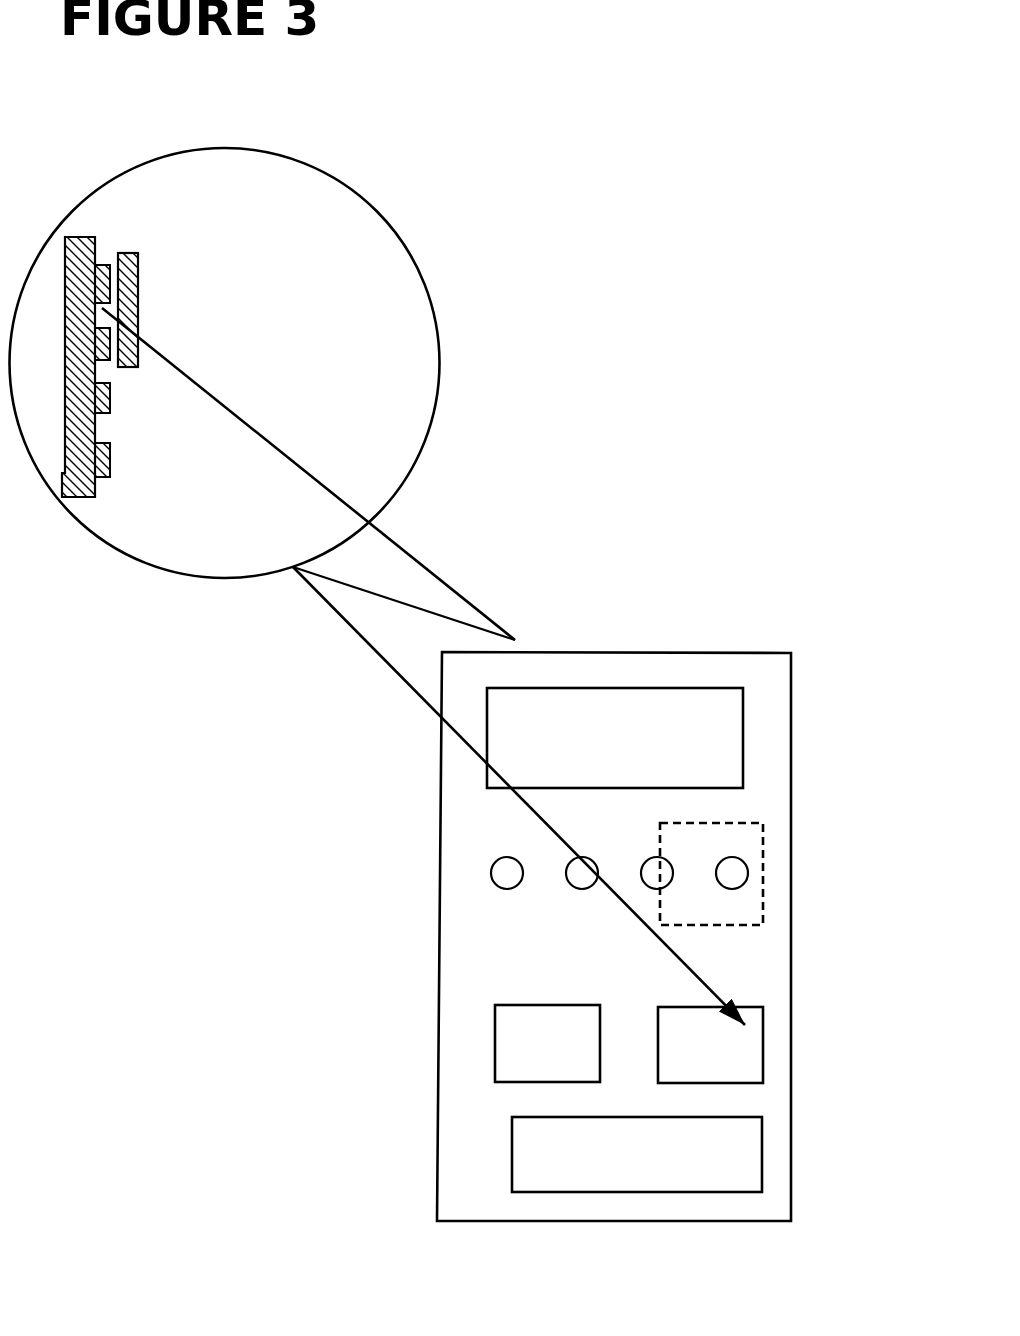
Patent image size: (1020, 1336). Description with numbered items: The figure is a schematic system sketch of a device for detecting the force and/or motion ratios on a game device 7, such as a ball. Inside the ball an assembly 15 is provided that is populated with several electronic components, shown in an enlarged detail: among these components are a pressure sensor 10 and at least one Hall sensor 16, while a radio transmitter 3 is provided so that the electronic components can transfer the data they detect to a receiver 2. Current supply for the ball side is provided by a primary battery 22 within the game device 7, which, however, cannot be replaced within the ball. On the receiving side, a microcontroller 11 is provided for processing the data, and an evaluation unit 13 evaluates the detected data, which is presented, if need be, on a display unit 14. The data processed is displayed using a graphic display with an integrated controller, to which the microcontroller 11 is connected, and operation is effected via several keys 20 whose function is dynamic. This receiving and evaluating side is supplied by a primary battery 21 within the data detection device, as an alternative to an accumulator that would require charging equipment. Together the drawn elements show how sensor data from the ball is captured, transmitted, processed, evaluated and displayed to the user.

The receiver 2 is at (748, 1050).
The radio transmitter 3 is at (97, 268).
The game device 7 is at (366, 273).
The pressure sensor 10 is at (110, 462).
The microcontroller 11 is at (500, 1032).
The evaluation unit 13 is at (740, 845).
The display unit 14 is at (578, 707).
The assembly 15 is at (95, 480).
The Hall sensor 16 is at (112, 393).
The keys 20 is at (730, 878).
The primary battery 21 is at (543, 1157).
The primary battery 22 is at (138, 300).